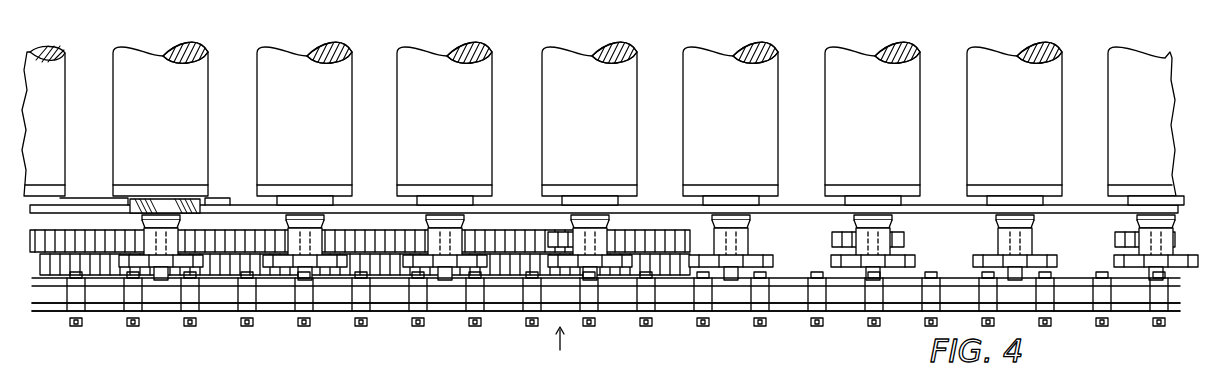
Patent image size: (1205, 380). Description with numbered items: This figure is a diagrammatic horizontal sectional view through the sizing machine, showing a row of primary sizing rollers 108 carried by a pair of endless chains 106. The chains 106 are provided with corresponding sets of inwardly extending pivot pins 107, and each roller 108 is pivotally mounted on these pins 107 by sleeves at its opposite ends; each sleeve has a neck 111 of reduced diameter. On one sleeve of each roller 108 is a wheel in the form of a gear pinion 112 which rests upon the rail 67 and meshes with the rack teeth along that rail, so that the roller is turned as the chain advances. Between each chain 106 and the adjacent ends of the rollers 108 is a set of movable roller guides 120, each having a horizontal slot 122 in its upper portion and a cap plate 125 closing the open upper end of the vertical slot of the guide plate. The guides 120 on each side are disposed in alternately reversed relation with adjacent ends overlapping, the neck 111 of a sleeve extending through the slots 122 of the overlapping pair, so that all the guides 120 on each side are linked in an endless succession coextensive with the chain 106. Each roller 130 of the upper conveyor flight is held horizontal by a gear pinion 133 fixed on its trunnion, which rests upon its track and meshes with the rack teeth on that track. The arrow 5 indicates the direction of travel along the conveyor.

The conveyor direction arrow 5 is at (559, 350).
The rail 67 is at (352, 276).
The endless chains 106 is at (285, 320).
The pivot pins 107 is at (160, 300).
The primary sizing rollers 108 is at (118, 97).
The necks 111 is at (170, 200).
The gear pinion 112 is at (450, 262).
The movable roller guides 120 is at (97, 192).
The horizontal slot 122 is at (162, 200).
The cap plate 125 is at (312, 186).
The roller 130 is at (52, 122).
The gear pinion 133 is at (606, 250).